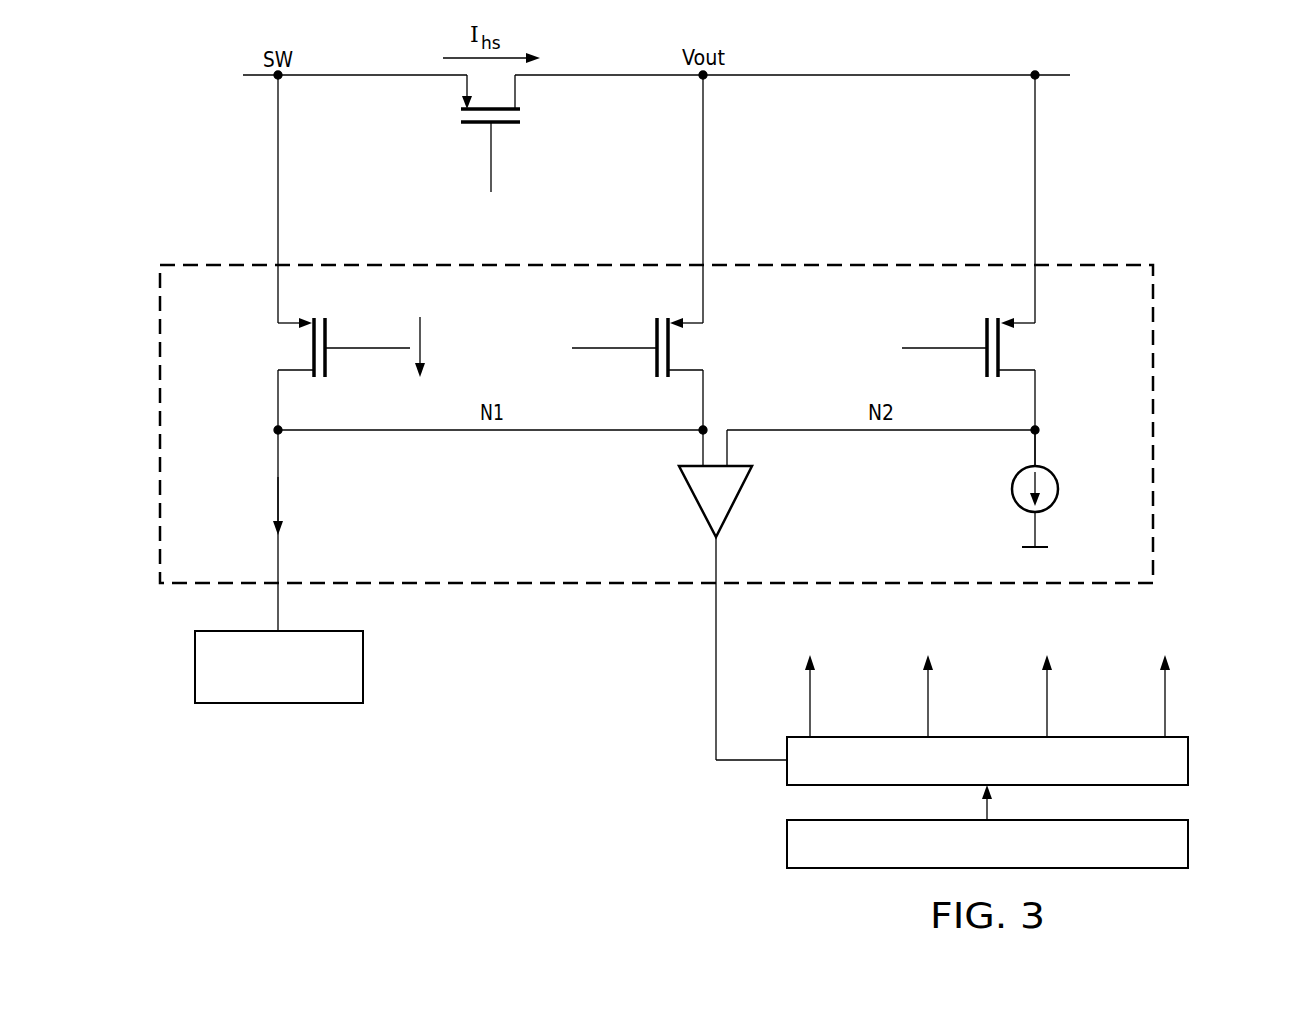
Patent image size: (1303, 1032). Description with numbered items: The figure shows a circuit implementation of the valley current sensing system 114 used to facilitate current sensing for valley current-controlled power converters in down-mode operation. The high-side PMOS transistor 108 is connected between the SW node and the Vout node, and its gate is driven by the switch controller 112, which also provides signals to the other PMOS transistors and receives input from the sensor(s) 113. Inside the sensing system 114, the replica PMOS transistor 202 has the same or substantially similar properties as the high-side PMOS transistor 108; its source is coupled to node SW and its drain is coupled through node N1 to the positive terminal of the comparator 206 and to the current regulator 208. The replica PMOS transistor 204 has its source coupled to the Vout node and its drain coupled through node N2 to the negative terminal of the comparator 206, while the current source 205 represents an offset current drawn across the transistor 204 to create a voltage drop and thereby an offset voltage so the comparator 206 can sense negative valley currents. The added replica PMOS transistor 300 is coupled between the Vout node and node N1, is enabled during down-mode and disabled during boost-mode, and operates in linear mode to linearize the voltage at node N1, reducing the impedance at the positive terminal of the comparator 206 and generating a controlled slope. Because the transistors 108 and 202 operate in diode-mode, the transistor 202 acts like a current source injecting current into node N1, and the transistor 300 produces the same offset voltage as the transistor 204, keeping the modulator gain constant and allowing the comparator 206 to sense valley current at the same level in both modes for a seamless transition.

The high-side PMOS transistor 108 is at (483, 127).
The switch controller 112 is at (1190, 775).
The sensor(s) 113 is at (1190, 843).
The valley current sensing system 114 is at (156, 408).
The replica PMOS transistor 202 is at (328, 334).
The replica PMOS transistor 204 is at (984, 334).
The current source 205 is at (1012, 488).
The comparator 206 is at (697, 500).
The current regulator 208 is at (195, 665).
The replica PMOS transistor 300 is at (654, 334).